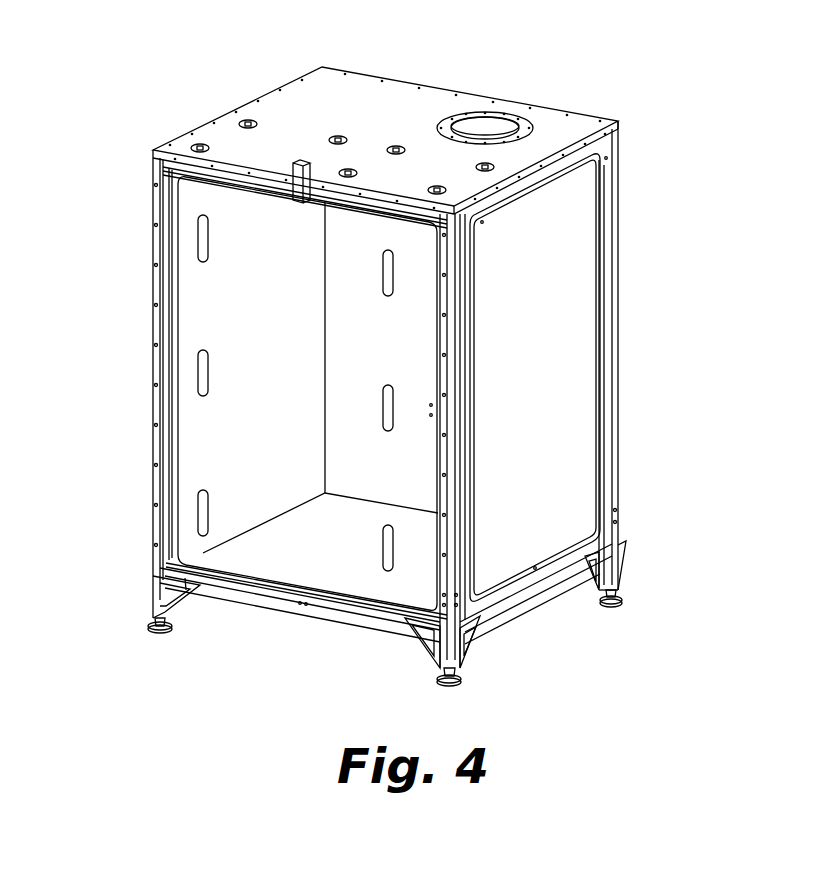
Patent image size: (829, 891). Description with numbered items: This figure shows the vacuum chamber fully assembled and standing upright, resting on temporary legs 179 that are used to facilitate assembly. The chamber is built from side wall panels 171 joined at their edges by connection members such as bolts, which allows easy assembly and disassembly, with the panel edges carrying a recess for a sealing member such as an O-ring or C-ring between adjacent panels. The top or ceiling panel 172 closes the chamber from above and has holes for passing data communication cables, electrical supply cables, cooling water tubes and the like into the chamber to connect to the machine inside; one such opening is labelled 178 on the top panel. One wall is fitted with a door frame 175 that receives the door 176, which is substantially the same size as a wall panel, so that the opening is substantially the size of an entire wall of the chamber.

The side wall panels 171 is at (567, 410).
The top panel 172 is at (366, 100).
The door frame 175 is at (152, 302).
The door 176 is at (195, 421).
The port 178 is at (497, 112).
The temporary legs 179 is at (623, 558).